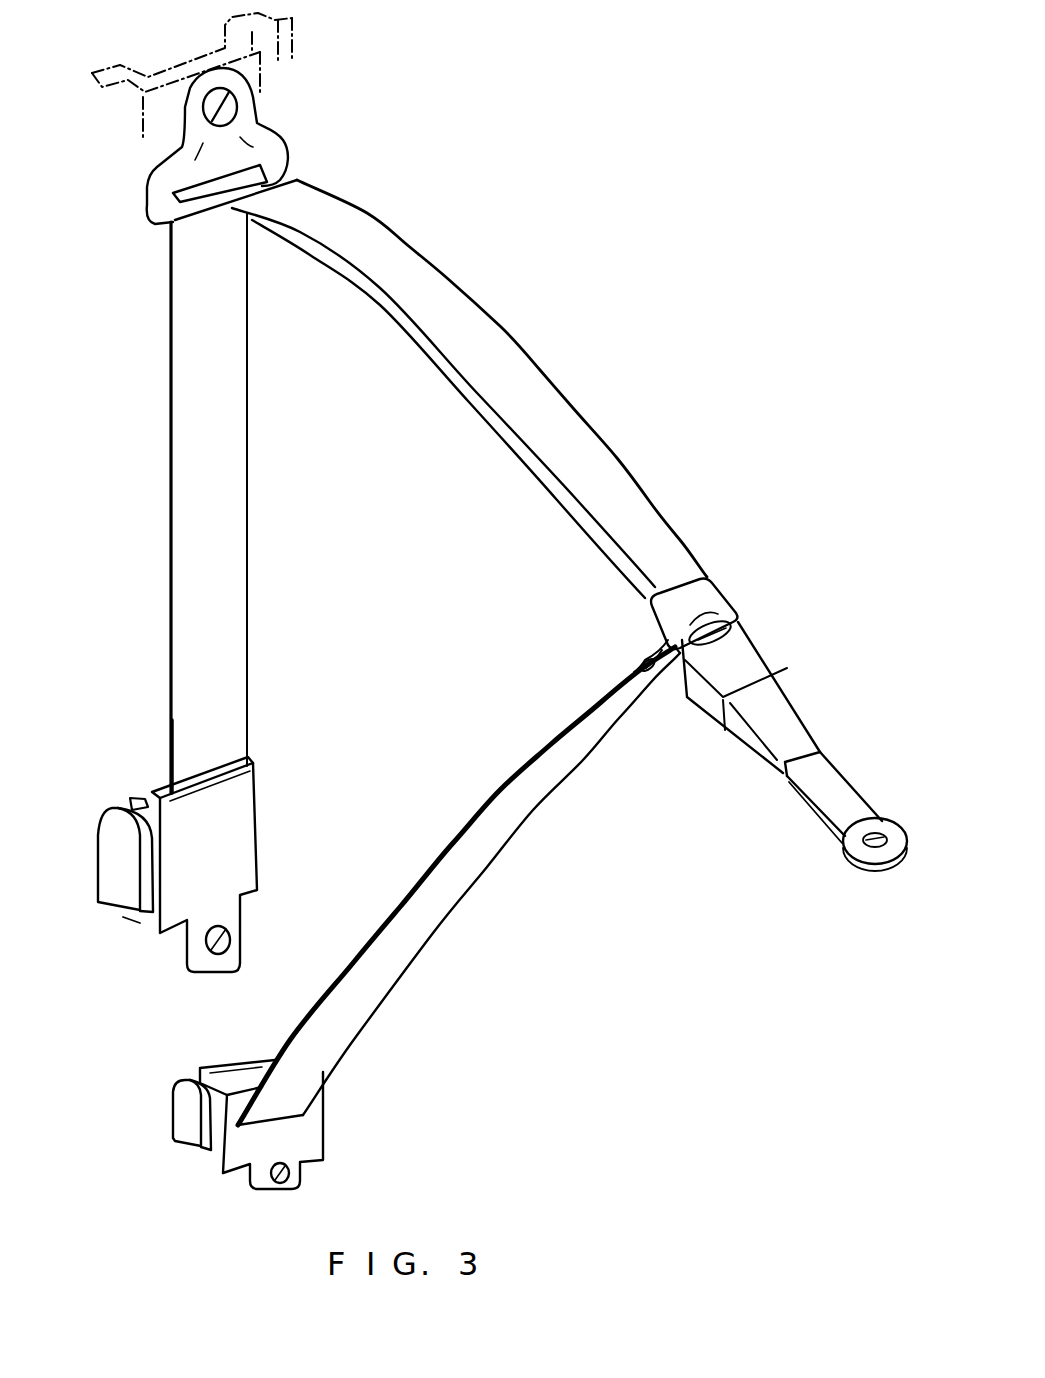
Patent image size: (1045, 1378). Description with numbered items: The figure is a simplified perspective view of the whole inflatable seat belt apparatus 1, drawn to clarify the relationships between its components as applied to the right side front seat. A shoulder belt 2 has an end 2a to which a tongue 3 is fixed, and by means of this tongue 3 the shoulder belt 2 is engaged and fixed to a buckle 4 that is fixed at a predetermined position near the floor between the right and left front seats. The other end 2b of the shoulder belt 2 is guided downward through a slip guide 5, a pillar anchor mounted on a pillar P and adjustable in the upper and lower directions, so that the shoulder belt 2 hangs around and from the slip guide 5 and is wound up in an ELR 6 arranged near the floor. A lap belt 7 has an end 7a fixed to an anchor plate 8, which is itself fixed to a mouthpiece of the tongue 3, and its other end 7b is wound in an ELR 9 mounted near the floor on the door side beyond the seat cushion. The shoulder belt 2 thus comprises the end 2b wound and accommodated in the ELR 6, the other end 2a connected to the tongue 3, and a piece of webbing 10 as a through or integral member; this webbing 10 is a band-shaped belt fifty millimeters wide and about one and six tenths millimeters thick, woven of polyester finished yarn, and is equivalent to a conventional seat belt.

The pillar P is at (300, 20).
The inflatable seat belt apparatus 1 is at (576, 275).
The shoulder belt 2 is at (600, 448).
The end of shoulder belt 2a is at (710, 566).
The other end of shoulder belt 2b is at (170, 792).
The tongue 3 is at (648, 634).
The buckle 4 is at (773, 649).
The slip guide 5 is at (276, 137).
The ELR 6 is at (254, 838).
The lap belt 7 is at (480, 875).
The end of lap belt 7a is at (680, 655).
The other end of lap belt 7b is at (328, 1080).
The anchor plate 8 is at (642, 664).
The ELR 9 is at (318, 1138).
The webbing 10 is at (247, 493).